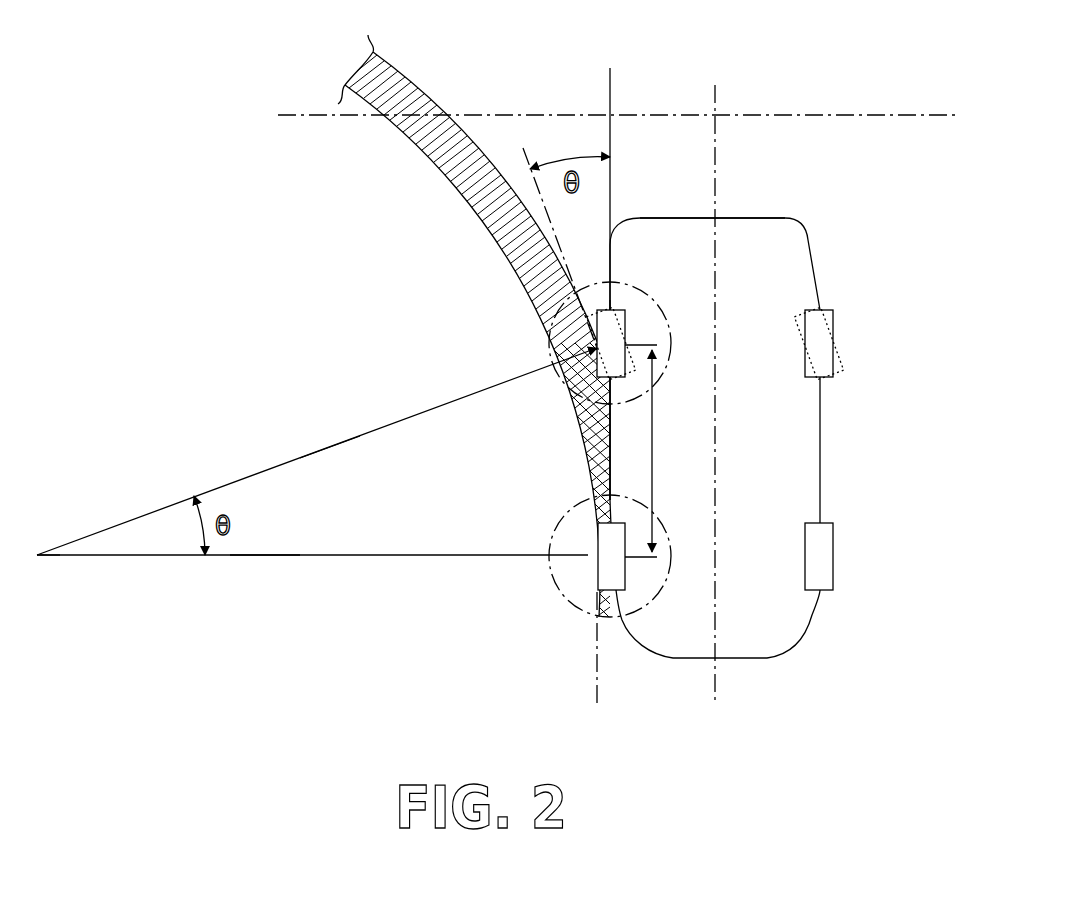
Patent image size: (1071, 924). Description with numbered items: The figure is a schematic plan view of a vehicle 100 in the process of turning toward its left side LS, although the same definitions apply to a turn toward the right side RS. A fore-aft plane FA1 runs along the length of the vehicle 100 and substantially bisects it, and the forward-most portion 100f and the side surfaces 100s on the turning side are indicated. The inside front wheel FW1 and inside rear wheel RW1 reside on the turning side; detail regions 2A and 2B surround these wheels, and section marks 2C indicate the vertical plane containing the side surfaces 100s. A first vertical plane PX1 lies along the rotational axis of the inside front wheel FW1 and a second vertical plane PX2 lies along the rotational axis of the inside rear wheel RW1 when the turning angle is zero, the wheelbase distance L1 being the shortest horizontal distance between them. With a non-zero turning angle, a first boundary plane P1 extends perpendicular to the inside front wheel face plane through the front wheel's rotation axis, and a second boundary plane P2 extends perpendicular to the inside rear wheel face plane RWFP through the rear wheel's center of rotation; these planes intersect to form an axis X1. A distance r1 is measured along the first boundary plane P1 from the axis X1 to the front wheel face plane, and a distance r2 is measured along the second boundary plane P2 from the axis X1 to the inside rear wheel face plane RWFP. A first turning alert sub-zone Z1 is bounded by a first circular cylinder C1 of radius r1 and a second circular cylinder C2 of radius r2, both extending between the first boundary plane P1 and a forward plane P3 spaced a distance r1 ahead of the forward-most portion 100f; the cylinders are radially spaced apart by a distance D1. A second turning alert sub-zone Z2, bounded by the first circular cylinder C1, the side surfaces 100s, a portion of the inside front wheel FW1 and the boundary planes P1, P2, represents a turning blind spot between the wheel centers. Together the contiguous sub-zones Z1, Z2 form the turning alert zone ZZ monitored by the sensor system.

The forward plane P3 is at (297, 115).
The first circular cylinder C1 is at (468, 135).
The second circular cylinder C2 is at (442, 172).
The first turning alert sub-zone Z1 is at (513, 230).
The second turning alert sub-zone Z2 is at (585, 415).
The turning alert zone ZZ is at (512, 268).
The fore-aft plane FA1 is at (715, 98).
The vehicle 100 is at (760, 400).
The forward-most portion 100f is at (722, 218).
The side surfaces 100s is at (612, 443).
The inside front wheel FW1 is at (617, 307).
The inside rear wheel RW1 is at (626, 576).
The first vertical plane PX1 is at (647, 303).
The second vertical plane PX2 is at (632, 562).
The wheelbase distance L1 is at (655, 407).
The spacing distance D1 is at (561, 351).
The distance r1 is at (317, 451).
The distance r2 is at (312, 570).
The first boundary plane P1 is at (330, 446).
The second boundary plane P2 is at (265, 557).
The axis X1 is at (37, 555).
The left side LS is at (276, 304).
The right side RS is at (931, 304).
The detail view 2A is at (563, 382).
The detail view 2B is at (552, 528).
The section 2C is at (588, 628).
The inside rear wheel face plane RWFP is at (597, 658).